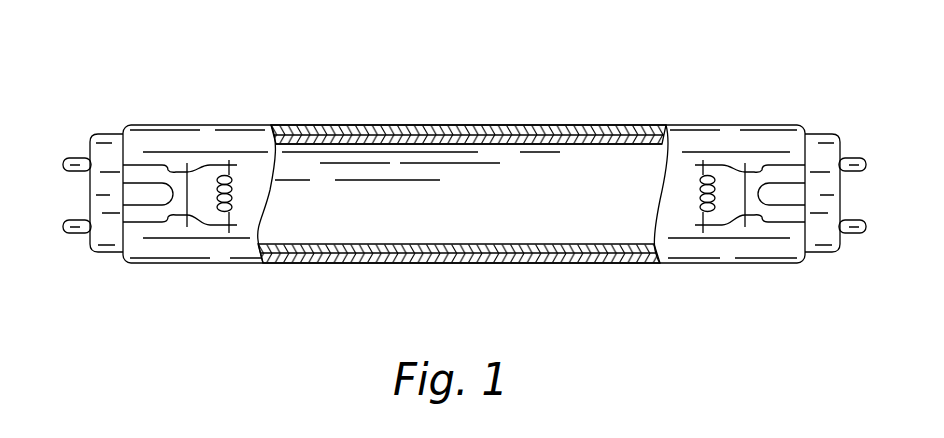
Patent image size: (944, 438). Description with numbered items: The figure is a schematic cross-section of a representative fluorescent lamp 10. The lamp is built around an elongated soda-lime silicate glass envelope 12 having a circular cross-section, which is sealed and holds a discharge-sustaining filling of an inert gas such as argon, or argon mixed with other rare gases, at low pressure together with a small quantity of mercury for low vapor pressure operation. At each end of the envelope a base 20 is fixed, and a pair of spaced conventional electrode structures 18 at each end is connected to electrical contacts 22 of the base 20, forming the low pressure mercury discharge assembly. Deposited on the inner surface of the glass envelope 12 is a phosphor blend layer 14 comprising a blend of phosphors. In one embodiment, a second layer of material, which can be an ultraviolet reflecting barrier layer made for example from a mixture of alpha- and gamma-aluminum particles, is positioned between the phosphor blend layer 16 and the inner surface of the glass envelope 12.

The fluorescent lamp 10 is at (199, 45).
The glass envelope 12 is at (395, 125).
The phosphor blend layer 14 is at (508, 127).
The phosphor blend layer 16 is at (604, 127).
The electrode structures 18 is at (232, 198).
The base 20 is at (107, 256).
The electrical contacts 22 is at (67, 157).